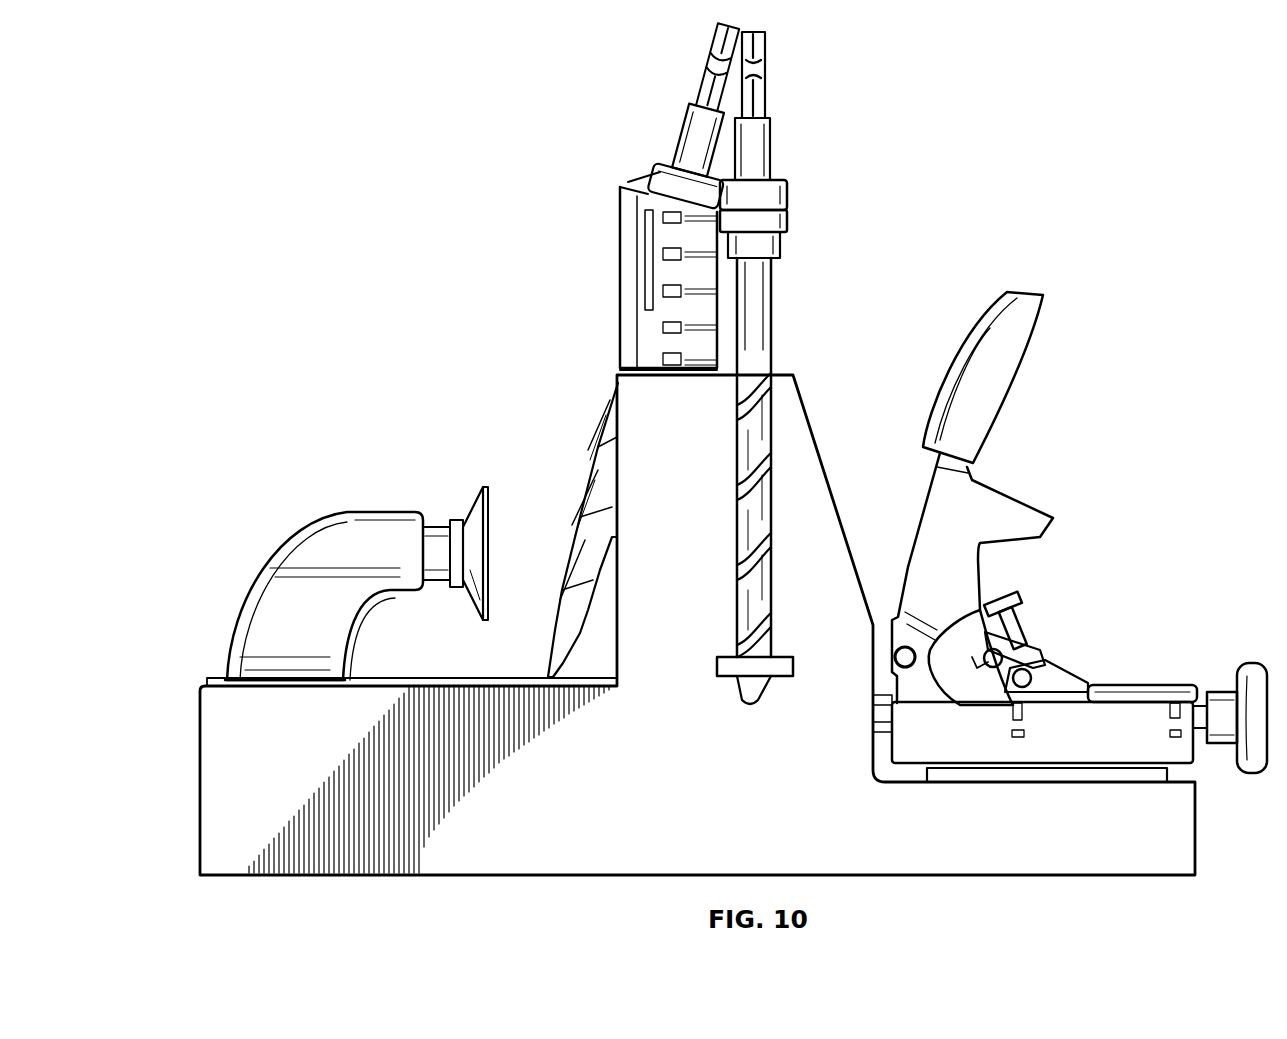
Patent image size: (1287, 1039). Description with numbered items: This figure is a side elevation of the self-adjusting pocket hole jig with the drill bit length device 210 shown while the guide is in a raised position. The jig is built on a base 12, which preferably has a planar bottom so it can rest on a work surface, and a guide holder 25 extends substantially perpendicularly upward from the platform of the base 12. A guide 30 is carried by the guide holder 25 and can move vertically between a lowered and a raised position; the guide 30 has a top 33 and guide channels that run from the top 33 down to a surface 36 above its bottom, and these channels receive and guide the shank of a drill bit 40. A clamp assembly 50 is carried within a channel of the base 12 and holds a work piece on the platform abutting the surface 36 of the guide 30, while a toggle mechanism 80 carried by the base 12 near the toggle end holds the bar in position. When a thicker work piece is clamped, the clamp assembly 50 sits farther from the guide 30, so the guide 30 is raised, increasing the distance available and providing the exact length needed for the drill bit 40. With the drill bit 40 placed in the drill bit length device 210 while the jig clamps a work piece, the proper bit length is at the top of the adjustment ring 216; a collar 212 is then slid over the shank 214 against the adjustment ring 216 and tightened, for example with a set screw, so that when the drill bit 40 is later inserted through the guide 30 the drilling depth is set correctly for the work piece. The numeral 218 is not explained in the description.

The base 12 is at (525, 878).
The guide holder 25 is at (850, 645).
The guide 30 is at (632, 256).
The top 33 is at (640, 180).
The surface 36 is at (640, 296).
The drill bit 40 is at (780, 410).
The clamp assembly 50 is at (345, 508).
The toggle mechanism 80 is at (1030, 600).
The drill bit length device 210 is at (728, 360).
The collar 212 is at (672, 160).
The shank 214 is at (773, 292).
The adjustment ring 216 is at (790, 218).
The depth stop 218 is at (780, 653).